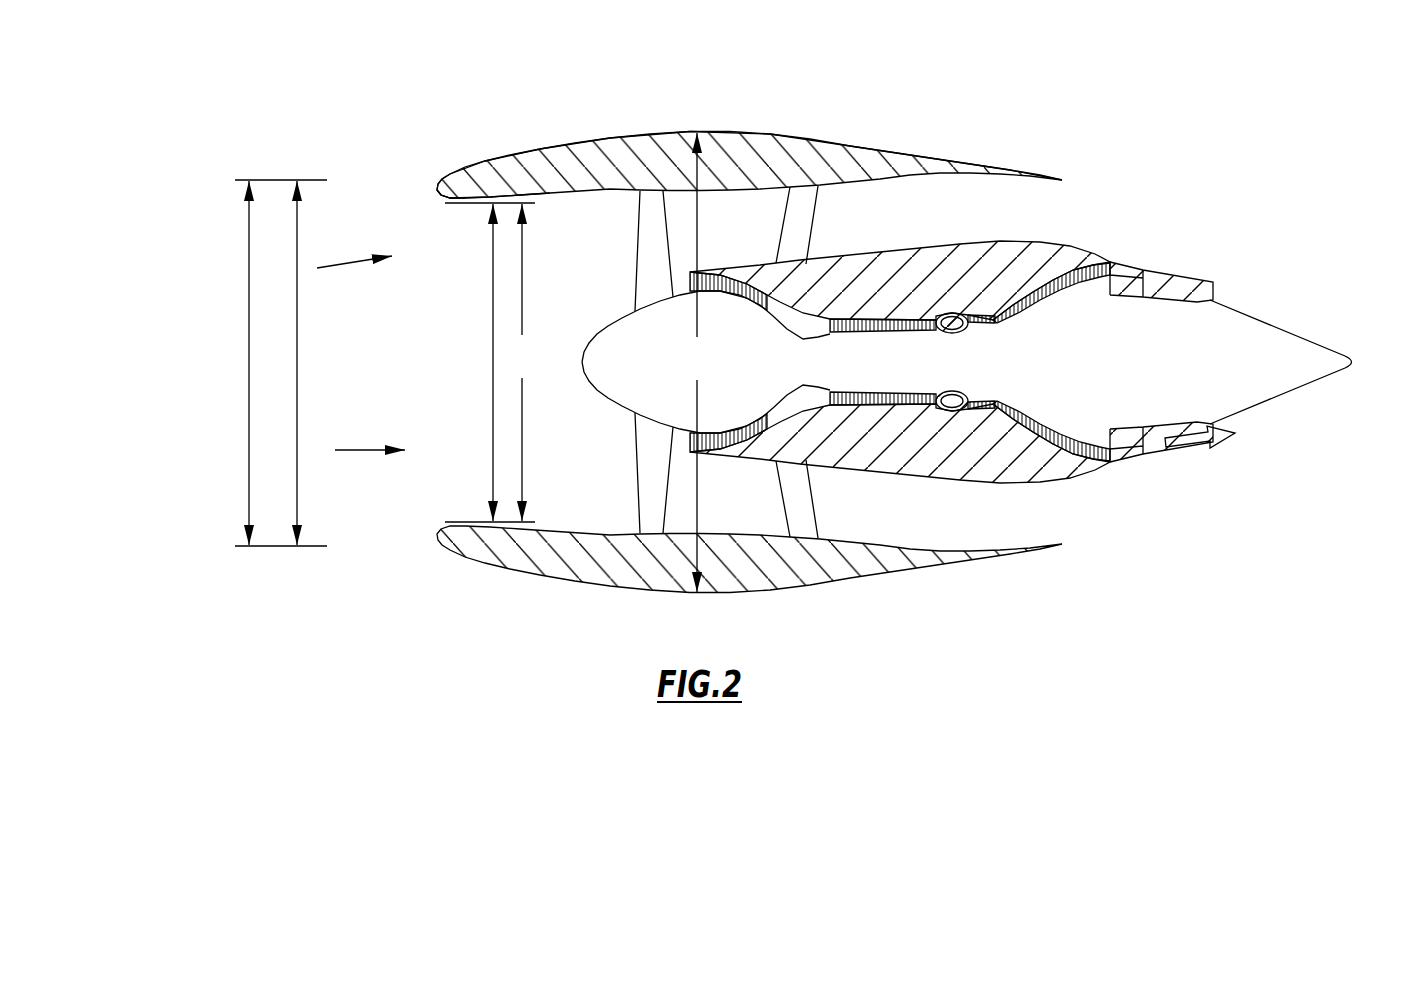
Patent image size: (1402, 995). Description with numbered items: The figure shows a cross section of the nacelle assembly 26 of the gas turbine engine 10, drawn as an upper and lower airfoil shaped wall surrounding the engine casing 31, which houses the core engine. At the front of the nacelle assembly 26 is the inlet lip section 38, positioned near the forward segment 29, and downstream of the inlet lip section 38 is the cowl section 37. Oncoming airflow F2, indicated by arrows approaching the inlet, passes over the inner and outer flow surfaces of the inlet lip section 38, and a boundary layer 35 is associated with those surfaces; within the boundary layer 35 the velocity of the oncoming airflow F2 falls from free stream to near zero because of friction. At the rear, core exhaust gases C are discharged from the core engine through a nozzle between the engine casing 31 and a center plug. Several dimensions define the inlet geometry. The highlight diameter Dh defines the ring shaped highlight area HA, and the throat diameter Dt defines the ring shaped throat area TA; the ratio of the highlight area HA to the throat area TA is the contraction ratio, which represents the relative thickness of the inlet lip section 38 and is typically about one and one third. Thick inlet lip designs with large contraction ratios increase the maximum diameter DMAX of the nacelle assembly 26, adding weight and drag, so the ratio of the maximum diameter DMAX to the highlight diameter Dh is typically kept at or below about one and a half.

The gas turbine engine 10 is at (527, 104).
The nacelle assembly 26 is at (739, 120).
The forward segment 29 is at (435, 160).
The engine casing 31 is at (1022, 264).
The boundary layer 35 is at (481, 216).
The cowl section 37 is at (637, 133).
The inlet lip section 38 is at (442, 201).
The core exhaust gases C is at (1222, 437).
The oncoming airflow F2 is at (352, 270).
The highlight diameter Dh is at (249, 373).
The highlight area HA is at (297, 360).
The throat diameter Dt is at (493, 397).
The throat area TA is at (523, 362).
The maximum diameter DMAX is at (692, 362).